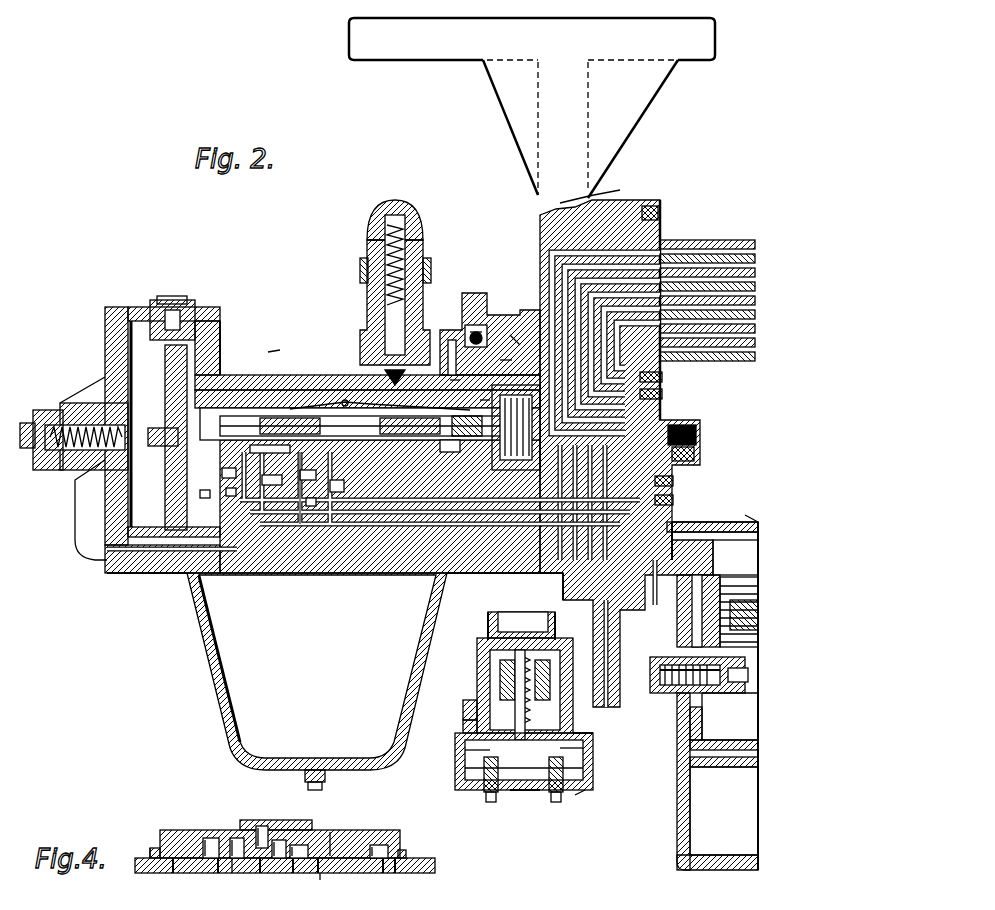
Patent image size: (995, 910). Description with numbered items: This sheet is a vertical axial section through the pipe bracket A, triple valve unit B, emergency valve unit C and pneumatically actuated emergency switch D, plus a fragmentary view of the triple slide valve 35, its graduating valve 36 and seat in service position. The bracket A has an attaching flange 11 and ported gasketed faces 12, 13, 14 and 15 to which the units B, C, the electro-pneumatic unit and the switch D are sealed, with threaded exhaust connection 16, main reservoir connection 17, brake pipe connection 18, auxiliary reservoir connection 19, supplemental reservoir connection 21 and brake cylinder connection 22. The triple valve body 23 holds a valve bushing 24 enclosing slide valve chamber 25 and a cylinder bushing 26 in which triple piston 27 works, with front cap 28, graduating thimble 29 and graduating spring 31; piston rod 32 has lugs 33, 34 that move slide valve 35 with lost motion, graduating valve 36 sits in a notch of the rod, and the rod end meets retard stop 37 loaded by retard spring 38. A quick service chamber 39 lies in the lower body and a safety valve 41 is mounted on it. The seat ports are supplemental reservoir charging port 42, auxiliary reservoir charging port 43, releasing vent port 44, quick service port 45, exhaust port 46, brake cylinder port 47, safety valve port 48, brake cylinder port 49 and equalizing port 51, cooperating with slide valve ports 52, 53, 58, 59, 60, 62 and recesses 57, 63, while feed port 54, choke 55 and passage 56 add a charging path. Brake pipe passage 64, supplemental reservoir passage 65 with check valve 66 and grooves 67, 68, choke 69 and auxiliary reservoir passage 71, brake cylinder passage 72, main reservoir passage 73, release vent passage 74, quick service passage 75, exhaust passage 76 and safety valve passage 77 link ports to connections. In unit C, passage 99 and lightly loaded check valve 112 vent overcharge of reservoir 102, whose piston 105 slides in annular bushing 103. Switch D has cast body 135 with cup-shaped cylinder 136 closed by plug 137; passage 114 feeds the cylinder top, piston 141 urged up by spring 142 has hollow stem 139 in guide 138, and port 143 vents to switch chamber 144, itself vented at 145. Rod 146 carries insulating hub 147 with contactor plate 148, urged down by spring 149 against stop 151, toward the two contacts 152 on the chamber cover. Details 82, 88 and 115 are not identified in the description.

In FIG. 2, the attaching flange 11 is at (452, 48).
In FIG. 2, the ported face with gasket 12 is at (514, 300).
In FIG. 2, the ported face with ported gasket 13 is at (668, 525).
In FIG. 2, the ported face and ported gasket 14 is at (660, 245).
In FIG. 2, the ported face with ported gasket 15 is at (560, 592).
In FIG. 2, the exhaust connection 16 is at (655, 215).
In FIG. 2, the main reservoir connection 17 is at (662, 377).
In FIG. 2, the brake pipe connection 18 is at (662, 394).
In FIG. 2, the auxiliary reservoir connection 19 is at (700, 428).
In FIG. 2, the supplemental reservoir connection 21 is at (752, 320).
In FIG. 2, the brake cylinder connection 22 is at (675, 503).
In FIG. 2, the body 23 is at (313, 374).
In FIG. 2, the valve bushing 24 is at (320, 365).
In FIG. 2, the slide valve chamber 25 is at (262, 395).
In FIG. 2, the cylinder bushing 26 is at (174, 429).
In FIG. 2, the triple piston 27 is at (172, 458).
In FIG. 2, the front cap 28 is at (105, 365).
In FIG. 2, the graduating thimble 29 is at (90, 447).
In FIG. 2, the graduating spring 31 is at (55, 450).
In FIG. 2, the rod 32 is at (370, 424).
In FIG. 2, the lug 33 is at (170, 430).
In FIG. 2, the lug 34 is at (463, 426).
In FIG. 2, the triple slide valve 35 is at (290, 427).
In FIG. 4, the triple slide valve 35 is at (183, 830).
In FIG. 2, the graduating valve 36 is at (410, 427).
In FIG. 4, the graduating valve 36 is at (280, 830).
In FIG. 2, the retard stop 37 is at (380, 399).
In FIG. 2, the retard spring 38 is at (483, 427).
In FIG. 2, the quick service chamber 39 is at (317, 681).
In FIG. 2, the safety valve 41 is at (375, 298).
In FIG. 2, the supplemental reservoir charging port 42 is at (202, 488).
In FIG. 4, the supplemental reservoir charging port 42 is at (175, 873).
In FIG. 2, the auxiliary reservoir charging port 43 is at (333, 490).
In FIG. 4, the auxiliary reservoir charging port 43 is at (220, 873).
In FIG. 2, the releasing vent port 44 is at (276, 484).
In FIG. 4, the releasing vent port 44 is at (235, 873).
In FIG. 2, the quick service port 45 is at (310, 497).
In FIG. 4, the quick service port 45 is at (265, 873).
In FIG. 2, the exhaust port 46 is at (270, 456).
In FIG. 4, the exhaust port 46 is at (295, 860).
In FIG. 2, the brake cylinder port 47 is at (238, 473).
In FIG. 4, the brake cylinder port 47 is at (310, 875).
In FIG. 2, the safety valve port 48 is at (437, 443).
In FIG. 4, the safety valve port 48 is at (320, 877).
In FIG. 2, the brake cylinder port 49 is at (307, 502).
In FIG. 4, the brake cylinder port 49 is at (350, 878).
In FIG. 4, the supplemental reservoir equalizing port 51 is at (395, 877).
In FIG. 4, the through port 52 is at (160, 848).
In FIG. 4, the through port 53 is at (220, 838).
In FIG. 2, the feed port 54 is at (205, 357).
In FIG. 2, the choke 55 is at (185, 330).
In FIG. 2, the passage 56 is at (212, 370).
In FIG. 2, the recess 57 is at (497, 355).
In FIG. 4, the recess 57 is at (260, 830).
In FIG. 4, the port 58 is at (285, 845).
In FIG. 4, the port 59 is at (305, 845).
In FIG. 4, the through port 60 is at (330, 845).
In FIG. 2, the port 62 is at (227, 485).
In FIG. 4, the port 62 is at (227, 845).
In FIG. 4, the recess 63 is at (395, 835).
In FIG. 2, the brake pipe passage 64 is at (752, 305).
In FIG. 2, the supplemental reservoir passage 65 is at (675, 483).
In FIG. 2, the check valve 66 is at (457, 337).
In FIG. 2, the groove 67 is at (477, 400).
In FIG. 2, the groove 68 is at (440, 380).
In FIG. 2, the choke 69 is at (700, 442).
In FIG. 2, the passage 71 is at (752, 292).
In FIG. 2, the passage 72 is at (545, 268).
In FIG. 2, the passage 73 is at (752, 335).
In FIG. 2, the passage 74 is at (752, 280).
In FIG. 2, the passage 75 is at (303, 528).
In FIG. 2, the passage 76 is at (752, 266).
In FIG. 2, the passage 77 is at (428, 345).
In FIG. 2, the chamber 82 is at (735, 557).
In FIG. 2, the spring 88 is at (506, 342).
In FIG. 2, the passage 99 is at (708, 630).
In FIG. 2, the reservoir 102 is at (730, 716).
In FIG. 2, the annular cylinder bushing 103 is at (738, 610).
In FIG. 2, the piston 105 is at (757, 626).
In FIG. 2, the check valve 112 is at (742, 685).
In FIG. 2, the passage 114 is at (752, 358).
In FIG. 2, the chamber 115 is at (717, 696).
In FIG. 2, the cast body 135 is at (612, 660).
In FIG. 2, the cup-shaped cylinder 136 is at (478, 682).
In FIG. 2, the threaded plug 137 is at (521, 625).
In FIG. 2, the guide 138 is at (592, 735).
In FIG. 2, the hollow stem 139 is at (478, 708).
In FIG. 2, the piston 141 is at (505, 662).
In FIG. 2, the spring 142 is at (680, 680).
In FIG. 2, the port 143 is at (468, 728).
In FIG. 2, the switch chamber 144 is at (592, 760).
In FIG. 2, the atmospheric vent 145 is at (520, 785).
In FIG. 2, the rod 146 is at (480, 640).
In FIG. 2, the insulating hub 147 is at (525, 715).
In FIG. 2, the annular conducting contactor plate 148 is at (492, 750).
In FIG. 2, the spring 149 is at (592, 750).
In FIG. 2, the stop 151 is at (572, 768).
In FIG. 2, the contacts 152 is at (487, 790).
In FIG. 2, the pipe bracket A is at (601, 188).
In FIG. 2, the triple valve unit B is at (280, 345).
In FIG. 2, the emergency valve unit C is at (755, 506).
In FIG. 2, the pneumatically actuated emergency switch D is at (583, 799).